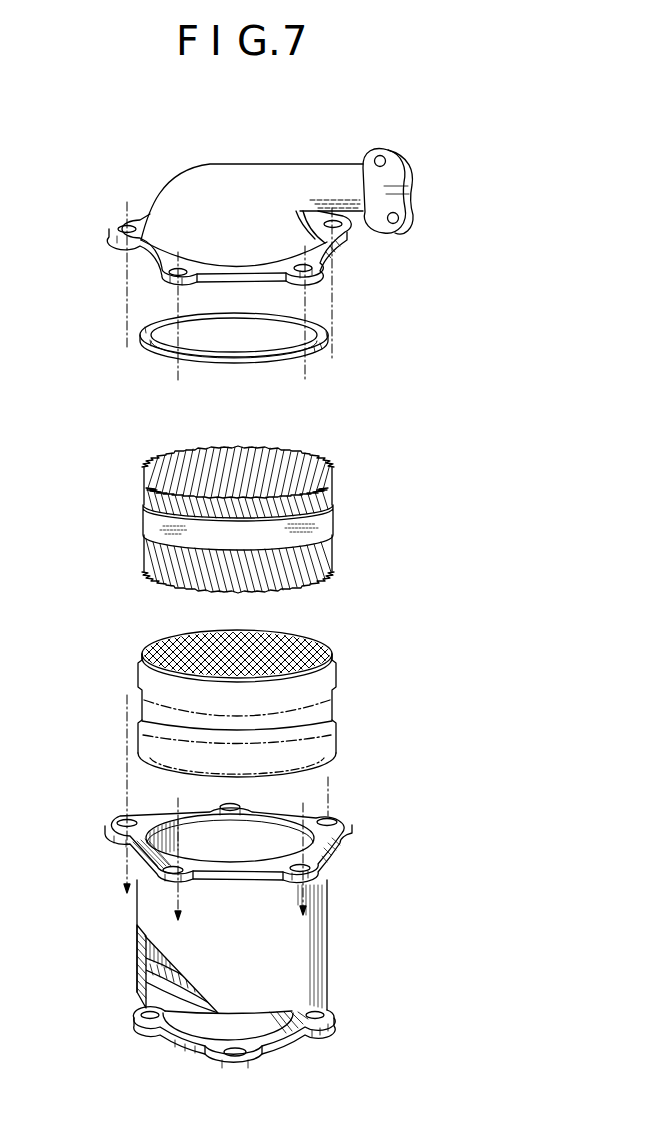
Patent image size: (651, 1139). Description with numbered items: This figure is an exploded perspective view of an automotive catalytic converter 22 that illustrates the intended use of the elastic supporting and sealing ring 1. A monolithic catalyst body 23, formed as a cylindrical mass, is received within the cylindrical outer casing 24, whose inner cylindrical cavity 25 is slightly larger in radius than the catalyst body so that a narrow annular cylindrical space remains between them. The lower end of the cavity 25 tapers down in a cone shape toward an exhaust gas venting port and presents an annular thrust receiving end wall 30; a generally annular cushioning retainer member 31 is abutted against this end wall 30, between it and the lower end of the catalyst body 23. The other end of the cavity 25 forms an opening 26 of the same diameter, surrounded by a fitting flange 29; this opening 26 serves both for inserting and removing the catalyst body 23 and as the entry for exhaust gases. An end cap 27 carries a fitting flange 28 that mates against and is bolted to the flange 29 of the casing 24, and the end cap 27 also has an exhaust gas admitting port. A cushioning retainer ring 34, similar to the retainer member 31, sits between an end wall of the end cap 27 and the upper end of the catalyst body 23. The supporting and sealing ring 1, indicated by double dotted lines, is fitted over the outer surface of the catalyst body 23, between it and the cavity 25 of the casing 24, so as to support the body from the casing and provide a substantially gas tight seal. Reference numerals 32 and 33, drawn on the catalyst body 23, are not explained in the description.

The supporting and sealing ring 1 is at (337, 495).
The catalytic converter 22 is at (248, 695).
The monolithic catalyst body 23 is at (147, 647).
The cylindrical outer casing 24 is at (226, 929).
The inner cylindrical cavity 25 is at (225, 836).
The opening 26 is at (124, 850).
The end cap 27 is at (215, 176).
The fitting flange 28 is at (120, 229).
The fitting flange 29 is at (109, 821).
The annular thrust receiving end wall 30 is at (160, 997).
The cushioning retainer member 31 is at (142, 962).
The lower end cap 32 is at (323, 760).
The upper end cap 33 is at (330, 740).
The cushioning retainer ring 34 is at (319, 360).